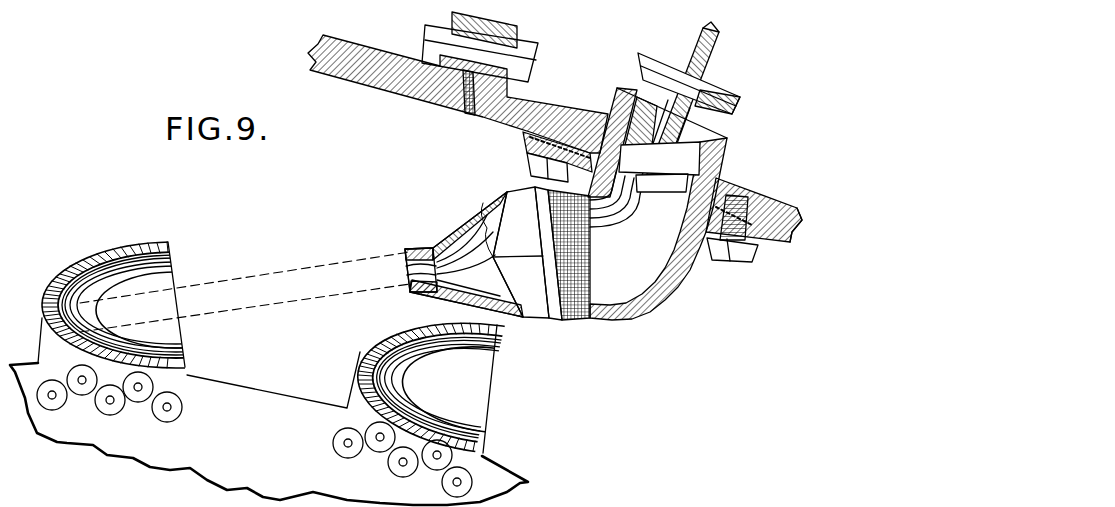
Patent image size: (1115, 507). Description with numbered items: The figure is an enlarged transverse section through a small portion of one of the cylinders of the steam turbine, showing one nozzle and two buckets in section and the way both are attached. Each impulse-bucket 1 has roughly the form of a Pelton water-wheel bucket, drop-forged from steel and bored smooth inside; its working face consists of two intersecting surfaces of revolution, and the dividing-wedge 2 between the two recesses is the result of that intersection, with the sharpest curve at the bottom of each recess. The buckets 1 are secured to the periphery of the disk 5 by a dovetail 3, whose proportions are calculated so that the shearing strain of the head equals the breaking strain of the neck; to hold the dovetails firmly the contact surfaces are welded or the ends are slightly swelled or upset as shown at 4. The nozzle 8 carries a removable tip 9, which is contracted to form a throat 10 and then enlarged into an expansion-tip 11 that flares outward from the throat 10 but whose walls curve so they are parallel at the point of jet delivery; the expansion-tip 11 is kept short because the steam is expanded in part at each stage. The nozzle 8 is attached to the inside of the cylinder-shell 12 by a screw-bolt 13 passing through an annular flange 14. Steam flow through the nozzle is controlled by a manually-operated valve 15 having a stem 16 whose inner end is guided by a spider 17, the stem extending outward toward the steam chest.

The impulse-bucket 1 is at (75, 268).
The dividing-wedge 2 is at (134, 273).
The dovetail 3 is at (78, 397).
The upset end of dovetail 4 is at (171, 407).
The disk 5 is at (269, 411).
The nozzle 8 is at (648, 276).
The removable tip 9 is at (497, 203).
The throat 10 is at (430, 247).
The expansion-tip 11 is at (404, 257).
The cylinder-shell 12 is at (385, 88).
The screw-bolt 13 is at (736, 263).
The annular flange 14 is at (761, 247).
The manually-operated valve 15 is at (742, 99).
The valve stem 16 is at (713, 53).
The spider 17 is at (681, 173).